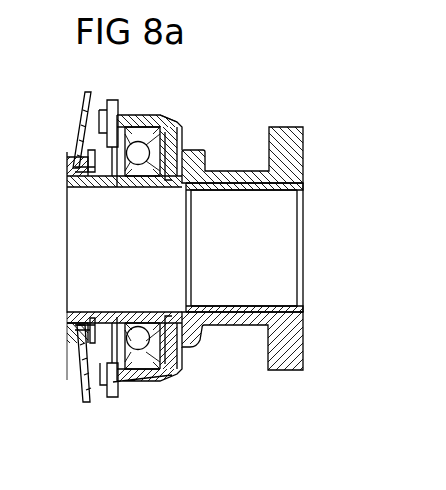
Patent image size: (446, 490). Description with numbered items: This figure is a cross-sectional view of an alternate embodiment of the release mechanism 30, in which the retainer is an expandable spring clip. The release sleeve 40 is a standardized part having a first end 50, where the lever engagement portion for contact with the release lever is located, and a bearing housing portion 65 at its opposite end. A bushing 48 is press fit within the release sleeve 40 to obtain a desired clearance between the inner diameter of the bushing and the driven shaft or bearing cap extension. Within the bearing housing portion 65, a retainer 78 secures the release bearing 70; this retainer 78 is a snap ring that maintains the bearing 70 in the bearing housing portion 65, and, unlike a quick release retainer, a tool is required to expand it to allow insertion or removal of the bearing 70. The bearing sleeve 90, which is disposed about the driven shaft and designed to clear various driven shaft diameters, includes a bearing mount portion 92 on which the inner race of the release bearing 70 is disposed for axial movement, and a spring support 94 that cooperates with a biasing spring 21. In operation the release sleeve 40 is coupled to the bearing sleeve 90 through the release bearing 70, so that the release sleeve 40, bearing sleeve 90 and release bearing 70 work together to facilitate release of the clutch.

The release mechanism 30 is at (151, 88).
The retainer 78 is at (112, 100).
The biasing spring 21 is at (84, 105).
The bearing housing portion 65 is at (143, 141).
The spring support 94 is at (88, 183).
The bearing mount portion 92 is at (170, 186).
The release sleeve 40 is at (247, 153).
The first end 50 is at (306, 128).
The bushing 48 is at (300, 188).
The bearing sleeve 90 is at (55, 314).
The release bearing 70 is at (110, 336).